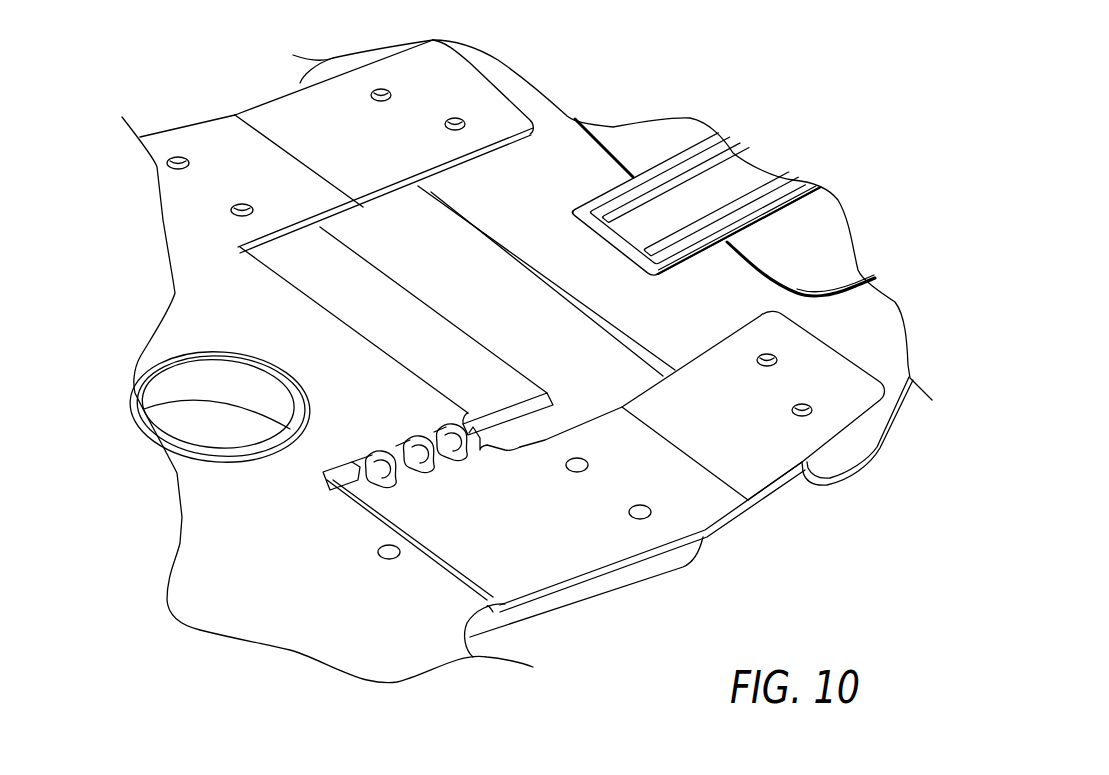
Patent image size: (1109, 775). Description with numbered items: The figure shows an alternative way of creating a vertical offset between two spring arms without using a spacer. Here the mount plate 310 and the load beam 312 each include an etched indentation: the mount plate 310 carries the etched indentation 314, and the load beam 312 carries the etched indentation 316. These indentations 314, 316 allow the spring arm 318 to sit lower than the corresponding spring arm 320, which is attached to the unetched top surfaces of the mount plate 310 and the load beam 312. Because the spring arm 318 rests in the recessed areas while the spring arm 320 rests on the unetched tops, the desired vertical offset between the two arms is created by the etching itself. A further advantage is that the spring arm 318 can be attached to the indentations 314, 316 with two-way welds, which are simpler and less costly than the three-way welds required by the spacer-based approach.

The load beam 312 is at (875, 320).
The spring arm 320 is at (385, 178).
The mount plate 310 is at (418, 318).
The etched indentation 314 is at (553, 418).
The spring arm 318 is at (763, 470).
The etched indentation 316 is at (853, 420).